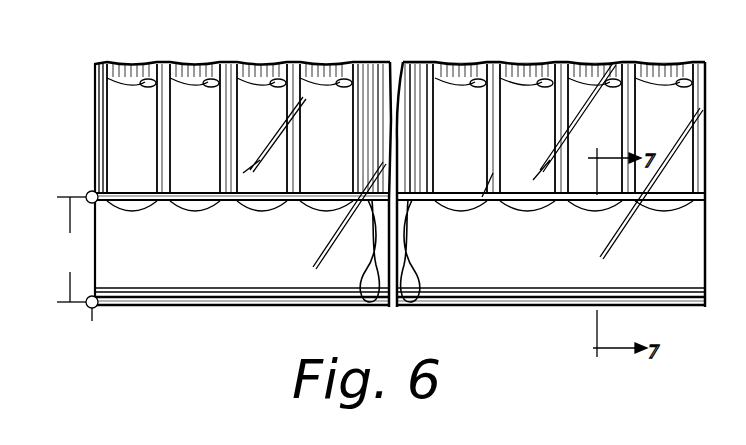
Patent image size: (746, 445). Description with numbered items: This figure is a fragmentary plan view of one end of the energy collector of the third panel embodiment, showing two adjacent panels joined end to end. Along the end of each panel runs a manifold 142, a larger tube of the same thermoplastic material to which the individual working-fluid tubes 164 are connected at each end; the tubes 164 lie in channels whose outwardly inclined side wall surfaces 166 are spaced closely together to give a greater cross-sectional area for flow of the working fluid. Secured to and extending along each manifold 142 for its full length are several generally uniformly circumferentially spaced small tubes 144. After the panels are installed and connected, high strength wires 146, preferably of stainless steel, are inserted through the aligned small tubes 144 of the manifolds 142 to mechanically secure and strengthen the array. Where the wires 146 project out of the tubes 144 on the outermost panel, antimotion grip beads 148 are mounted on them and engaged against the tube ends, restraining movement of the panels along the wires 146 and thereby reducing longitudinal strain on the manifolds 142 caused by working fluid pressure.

The manifold 142 is at (513, 286).
The small tubes 144 is at (132, 196).
The high strength wires 146 is at (67, 249).
The antimotion grip beads 148 is at (88, 193).
The tubes 164 is at (208, 95).
The side wall surfaces 166 is at (623, 63).